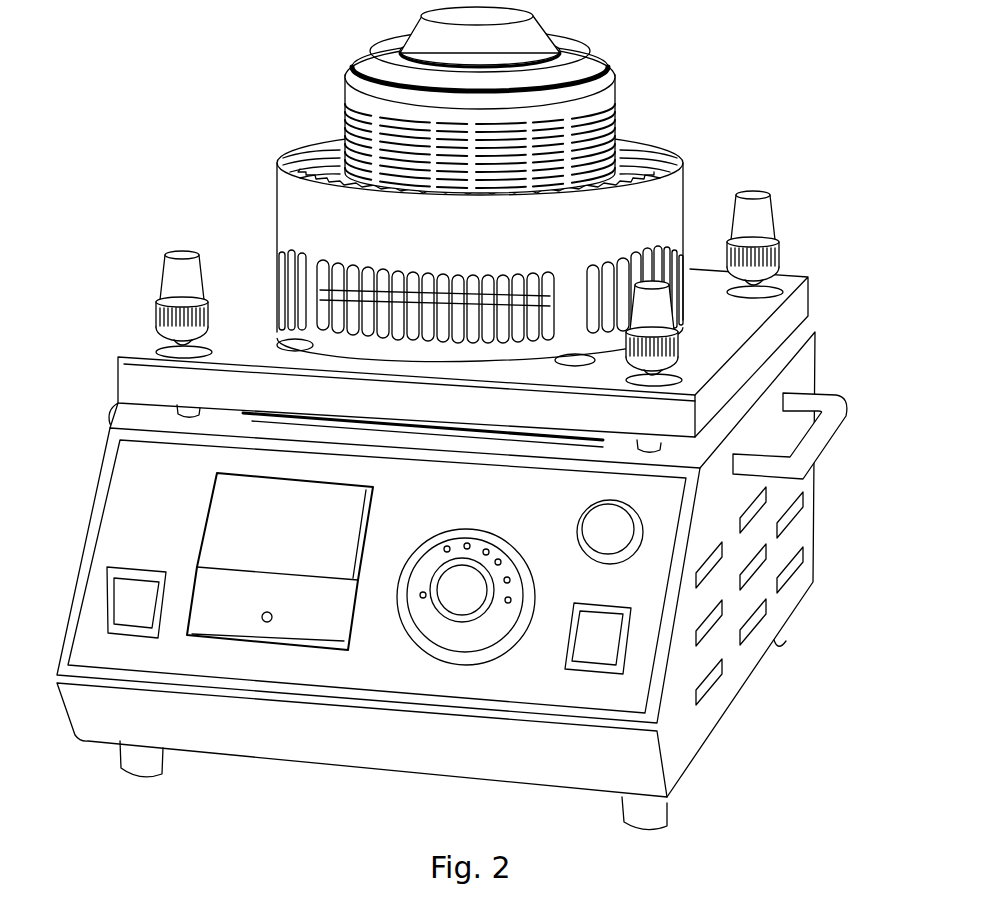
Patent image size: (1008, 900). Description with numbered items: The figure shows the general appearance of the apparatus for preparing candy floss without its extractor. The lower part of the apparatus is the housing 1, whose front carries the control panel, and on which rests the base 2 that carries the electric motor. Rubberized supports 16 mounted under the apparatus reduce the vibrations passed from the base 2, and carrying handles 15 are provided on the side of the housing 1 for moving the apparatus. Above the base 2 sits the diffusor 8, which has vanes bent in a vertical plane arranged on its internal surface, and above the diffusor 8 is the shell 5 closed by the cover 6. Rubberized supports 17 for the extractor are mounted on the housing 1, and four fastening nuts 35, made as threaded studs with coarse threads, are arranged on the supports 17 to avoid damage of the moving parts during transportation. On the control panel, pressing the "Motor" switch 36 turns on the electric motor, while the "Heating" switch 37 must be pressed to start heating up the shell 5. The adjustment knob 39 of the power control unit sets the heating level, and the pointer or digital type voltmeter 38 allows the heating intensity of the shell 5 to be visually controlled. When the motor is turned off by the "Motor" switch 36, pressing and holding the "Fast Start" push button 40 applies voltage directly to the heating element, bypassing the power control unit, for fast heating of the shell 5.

The housing 1 is at (810, 582).
The base 2 is at (125, 385).
The shell 5 is at (346, 107).
The cover 6 is at (545, 30).
The diffusor 8 is at (288, 202).
The carrying handles 15 is at (845, 405).
The rubberized supports 16 is at (135, 768).
The rubberized supports for an extractor 17 is at (763, 213).
The fastening nuts 35 is at (155, 320).
The "Motor" switch 36 is at (120, 596).
The "Heating" switch 37 is at (588, 648).
The voltmeter 38 is at (238, 505).
The adjustment knob 39 is at (462, 578).
The "Fast Start" push button 40 is at (608, 525).